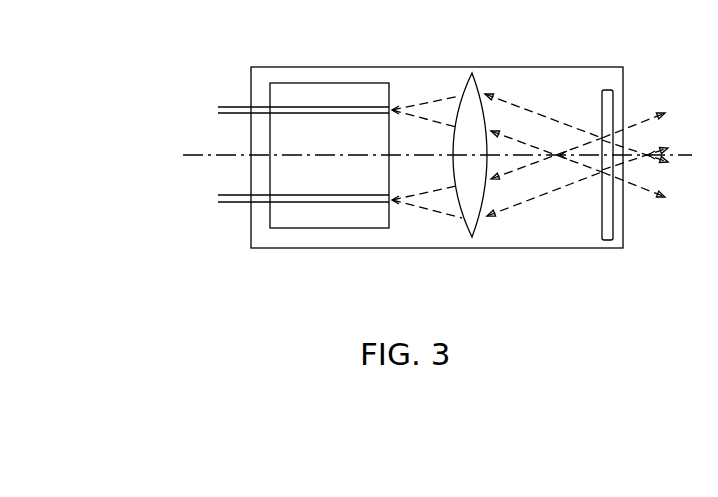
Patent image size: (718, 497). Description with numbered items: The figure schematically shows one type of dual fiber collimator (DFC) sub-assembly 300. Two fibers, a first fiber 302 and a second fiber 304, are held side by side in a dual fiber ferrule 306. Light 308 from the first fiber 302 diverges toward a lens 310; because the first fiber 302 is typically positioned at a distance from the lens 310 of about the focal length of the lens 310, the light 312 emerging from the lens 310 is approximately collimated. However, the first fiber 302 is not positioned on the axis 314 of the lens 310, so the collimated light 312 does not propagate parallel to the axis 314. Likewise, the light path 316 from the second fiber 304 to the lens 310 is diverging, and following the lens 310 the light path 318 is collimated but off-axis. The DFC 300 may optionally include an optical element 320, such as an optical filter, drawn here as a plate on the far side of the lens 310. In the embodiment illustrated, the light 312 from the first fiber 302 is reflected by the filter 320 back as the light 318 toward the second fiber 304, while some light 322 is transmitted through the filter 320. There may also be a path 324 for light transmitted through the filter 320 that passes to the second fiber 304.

The dual fiber collimator sub-assembly 300 is at (433, 250).
The first fiber 302 is at (233, 107).
The second fiber 304 is at (232, 205).
The dual fiber ferrule 306 is at (287, 83).
The light 308 is at (425, 100).
The lens 310 is at (473, 72).
The collimated light 312 is at (522, 107).
The axis 314 is at (323, 155).
The light path 316 is at (420, 210).
The light path 318 is at (520, 203).
The optical element 320 is at (613, 242).
The transmitted light 322 is at (652, 193).
The path 324 is at (647, 115).